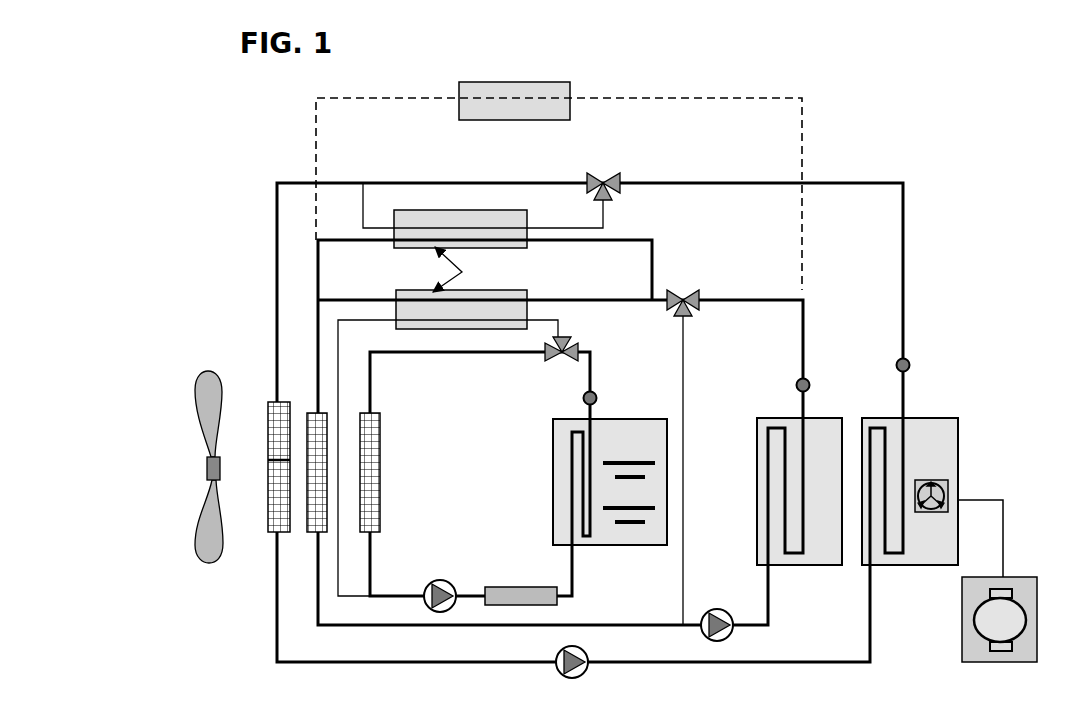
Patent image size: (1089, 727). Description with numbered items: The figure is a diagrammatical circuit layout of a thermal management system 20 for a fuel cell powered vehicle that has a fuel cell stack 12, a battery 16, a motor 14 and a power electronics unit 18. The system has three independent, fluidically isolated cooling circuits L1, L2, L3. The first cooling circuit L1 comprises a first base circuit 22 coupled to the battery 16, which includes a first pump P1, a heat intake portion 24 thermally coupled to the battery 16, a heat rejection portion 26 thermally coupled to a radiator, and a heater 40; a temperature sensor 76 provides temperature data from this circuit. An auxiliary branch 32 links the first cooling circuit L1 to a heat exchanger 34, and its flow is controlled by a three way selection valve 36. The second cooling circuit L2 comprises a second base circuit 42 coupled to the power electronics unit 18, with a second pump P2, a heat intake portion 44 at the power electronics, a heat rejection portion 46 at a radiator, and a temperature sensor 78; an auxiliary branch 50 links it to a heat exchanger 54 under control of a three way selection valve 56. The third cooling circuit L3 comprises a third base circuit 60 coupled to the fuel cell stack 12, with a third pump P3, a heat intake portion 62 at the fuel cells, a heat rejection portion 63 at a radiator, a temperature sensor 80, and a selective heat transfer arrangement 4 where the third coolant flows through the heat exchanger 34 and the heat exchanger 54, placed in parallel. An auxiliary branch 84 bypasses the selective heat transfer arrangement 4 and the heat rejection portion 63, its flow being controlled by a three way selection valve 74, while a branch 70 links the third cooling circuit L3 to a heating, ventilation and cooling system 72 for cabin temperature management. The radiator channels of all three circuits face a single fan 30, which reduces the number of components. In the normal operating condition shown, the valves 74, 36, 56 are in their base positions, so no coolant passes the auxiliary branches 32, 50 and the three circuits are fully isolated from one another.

The selective heat transfer arrangement 4 is at (458, 269).
The fuel cell stack 12 is at (787, 412).
The motor 14 is at (1035, 575).
The battery 16 is at (640, 415).
The power electronics unit 18 is at (912, 411).
The thermal management system 20 is at (830, 72).
The first base circuit 22 is at (387, 355).
The heat intake portion 24 is at (553, 477).
The heat rejection portion 26 is at (381, 440).
The fan 30 is at (210, 504).
The auxiliary branch 32 is at (562, 320).
The heat exchanger 34 is at (461, 309).
The selection valve 36 is at (562, 362).
The heater 40 is at (520, 587).
The second base circuit 42 is at (693, 183).
The heat intake portion 44 is at (893, 556).
The heat rejection portion 46 is at (268, 525).
The auxiliary branch 50 is at (363, 222).
The heat exchanger 54 is at (460, 229).
The selection valve 56 is at (607, 175).
The third base circuit 60 is at (727, 300).
The heat intake portion 62 is at (768, 513).
The heat rejection portion 63 is at (318, 407).
The branch 70 is at (803, 158).
The heating, ventilation and cooling system 72 is at (514, 101).
The selection valve 74 is at (685, 319).
The temperature sensor 76 is at (598, 397).
The temperature sensor 78 is at (911, 357).
The temperature sensor 80 is at (811, 385).
The auxiliary branch 84 is at (683, 455).
The first pump P1 is at (452, 581).
The second pump P2 is at (556, 672).
The third pump P3 is at (709, 612).
The first cooling circuit L1 is at (600, 366).
The second cooling circuit L2 is at (912, 330).
The third cooling circuit L3 is at (817, 351).